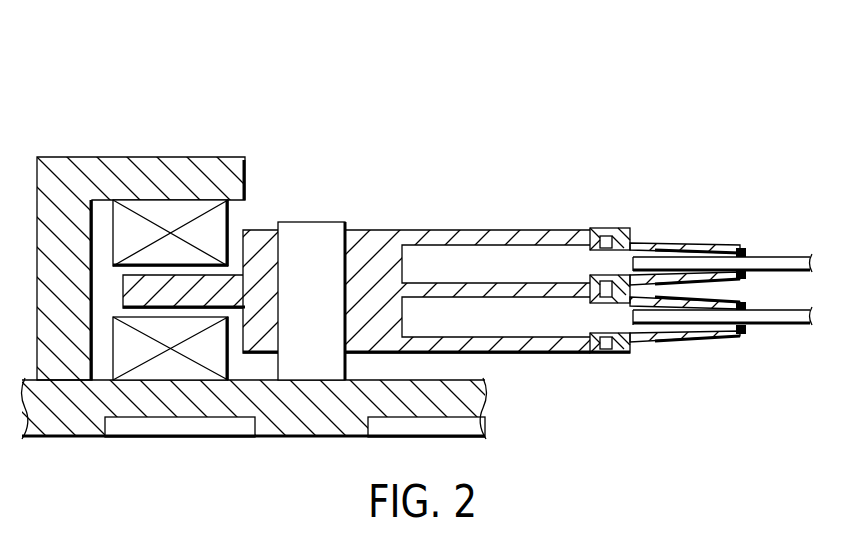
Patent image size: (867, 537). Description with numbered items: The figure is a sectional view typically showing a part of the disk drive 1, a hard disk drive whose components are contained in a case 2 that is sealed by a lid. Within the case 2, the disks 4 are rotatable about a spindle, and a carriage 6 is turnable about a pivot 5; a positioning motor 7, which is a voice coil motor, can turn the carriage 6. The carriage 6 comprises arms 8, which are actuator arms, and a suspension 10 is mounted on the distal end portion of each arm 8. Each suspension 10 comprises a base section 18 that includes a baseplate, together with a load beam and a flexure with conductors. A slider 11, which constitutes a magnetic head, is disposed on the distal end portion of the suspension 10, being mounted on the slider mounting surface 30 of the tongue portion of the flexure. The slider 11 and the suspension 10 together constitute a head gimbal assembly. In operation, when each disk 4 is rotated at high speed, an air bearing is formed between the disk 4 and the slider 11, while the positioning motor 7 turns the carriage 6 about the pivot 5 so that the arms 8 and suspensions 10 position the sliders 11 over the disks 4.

The disk drive 1 is at (182, 108).
The case 2 is at (80, 437).
The disk 4 is at (793, 258).
The pivot 5 is at (312, 230).
The carriage 6 is at (452, 224).
The positioning motor 7 is at (168, 372).
The arm 8 is at (551, 230).
The suspension 10 is at (711, 275).
The slider 11 is at (746, 250).
The base section 18 is at (634, 244).
The slider mounting surface 30 is at (656, 246).